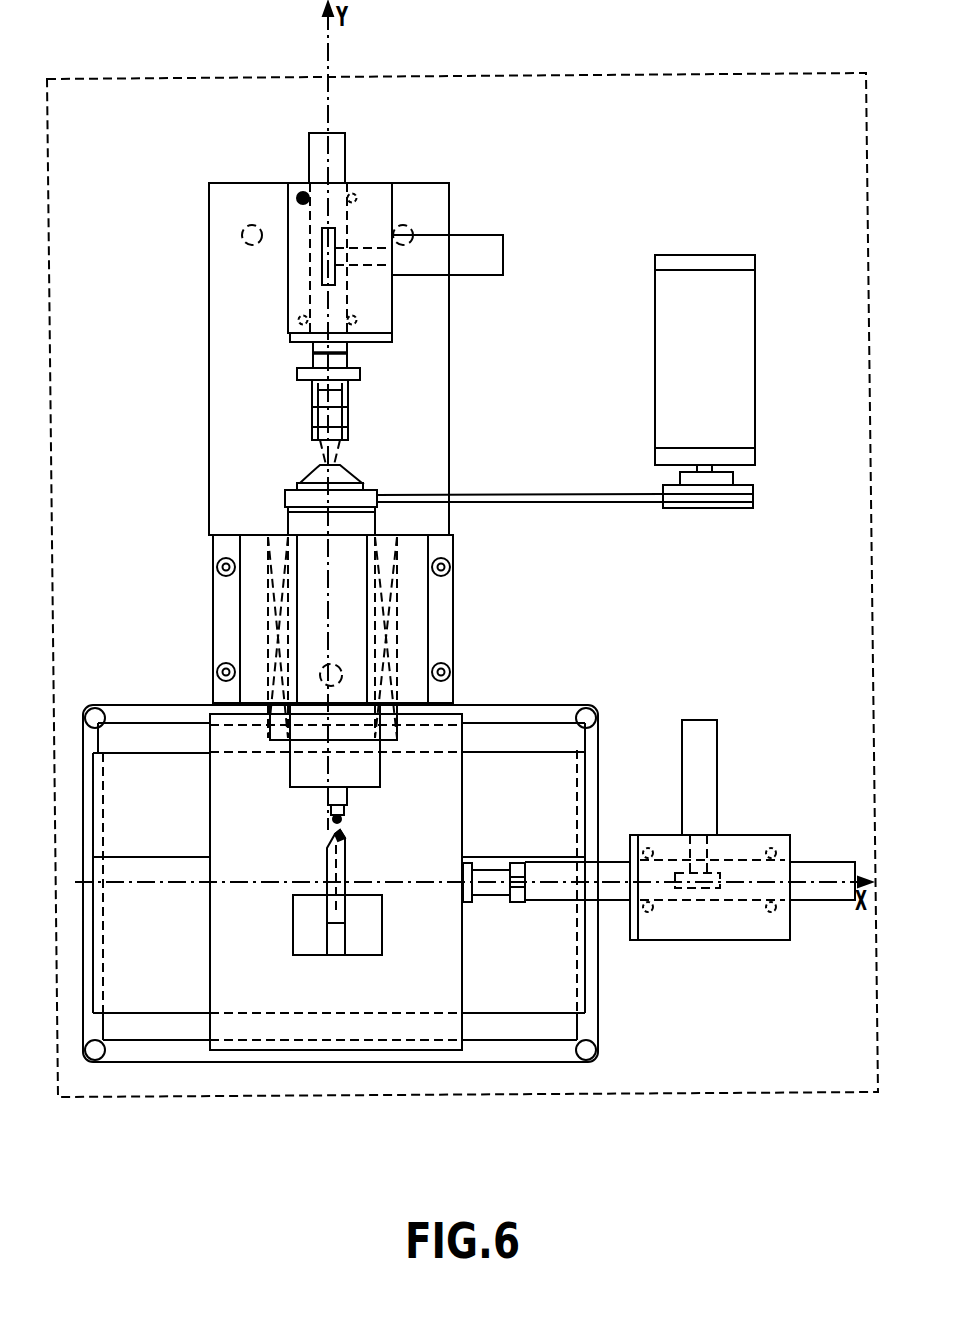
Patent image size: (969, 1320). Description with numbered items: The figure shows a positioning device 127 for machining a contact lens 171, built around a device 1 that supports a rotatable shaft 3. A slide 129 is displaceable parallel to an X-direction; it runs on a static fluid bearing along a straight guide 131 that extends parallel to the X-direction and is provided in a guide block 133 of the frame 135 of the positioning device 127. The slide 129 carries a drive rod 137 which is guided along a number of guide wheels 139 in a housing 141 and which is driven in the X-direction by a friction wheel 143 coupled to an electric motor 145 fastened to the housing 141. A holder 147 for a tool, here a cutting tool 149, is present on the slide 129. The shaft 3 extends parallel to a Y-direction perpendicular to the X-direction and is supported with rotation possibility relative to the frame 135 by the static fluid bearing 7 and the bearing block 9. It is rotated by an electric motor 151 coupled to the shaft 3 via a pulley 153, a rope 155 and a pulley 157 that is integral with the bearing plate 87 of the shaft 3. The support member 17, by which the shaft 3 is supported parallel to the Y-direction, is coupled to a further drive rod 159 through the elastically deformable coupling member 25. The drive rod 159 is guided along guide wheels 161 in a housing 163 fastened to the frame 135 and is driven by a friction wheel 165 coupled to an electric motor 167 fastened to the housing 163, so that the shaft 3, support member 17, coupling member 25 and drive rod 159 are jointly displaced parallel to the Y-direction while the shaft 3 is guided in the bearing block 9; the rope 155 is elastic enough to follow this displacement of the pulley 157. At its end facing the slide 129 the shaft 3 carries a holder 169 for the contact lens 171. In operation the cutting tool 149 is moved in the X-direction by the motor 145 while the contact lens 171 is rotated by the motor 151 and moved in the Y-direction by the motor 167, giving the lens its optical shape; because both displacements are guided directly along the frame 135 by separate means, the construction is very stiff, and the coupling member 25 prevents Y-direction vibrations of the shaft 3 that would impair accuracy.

The device 1 is at (190, 580).
The shaft 3 is at (370, 772).
The static fluid bearing 7 is at (385, 548).
The bearing block 9 is at (415, 632).
The support member 17 is at (305, 484).
The coupling member 25 is at (348, 399).
The bearing plate 87 is at (286, 506).
The positioning device 127 is at (124, 1115).
The slide 129 is at (452, 991).
The straight guide 131 is at (508, 905).
The guide block 133 is at (580, 767).
The frame 135 is at (772, 1093).
The drive rod 137 is at (821, 893).
The guide wheels 139 is at (648, 846).
The housing 141 is at (701, 935).
The friction wheel 143 is at (714, 872).
The electric motor 145 is at (705, 748).
The holder 147 is at (309, 948).
The cutting tool 149 is at (346, 862).
The electric motor 151 is at (745, 328).
The pulley 153 is at (742, 506).
The rope 155 is at (577, 503).
The pulley 157 is at (331, 523).
The drive rod 159 is at (345, 160).
The guide wheels 161 is at (302, 194).
The housing 163 is at (288, 298).
The friction wheel 165 is at (322, 262).
The electric motor 167 is at (483, 245).
The holder 169 is at (322, 792).
The contact lens 171 is at (346, 815).